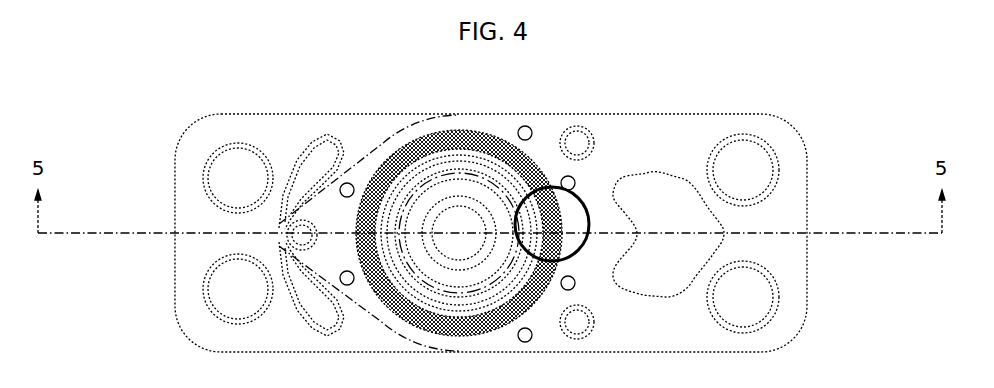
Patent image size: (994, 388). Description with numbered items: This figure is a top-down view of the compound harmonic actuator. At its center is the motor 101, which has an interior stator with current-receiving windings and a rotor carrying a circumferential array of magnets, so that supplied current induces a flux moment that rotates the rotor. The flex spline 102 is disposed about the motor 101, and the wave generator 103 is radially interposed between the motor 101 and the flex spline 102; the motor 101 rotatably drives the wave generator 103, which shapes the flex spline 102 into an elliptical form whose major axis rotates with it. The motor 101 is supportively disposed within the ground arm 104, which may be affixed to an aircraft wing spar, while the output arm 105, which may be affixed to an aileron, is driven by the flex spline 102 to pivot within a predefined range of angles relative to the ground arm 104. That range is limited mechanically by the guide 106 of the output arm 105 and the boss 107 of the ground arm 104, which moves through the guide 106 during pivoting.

The motor 101 is at (432, 205).
The flex spline 102 is at (518, 165).
The wave generator 103 is at (483, 158).
The ground arm 104 is at (637, 133).
The output arm 105 is at (197, 140).
The guide 106 is at (313, 162).
The boss 107 is at (300, 236).